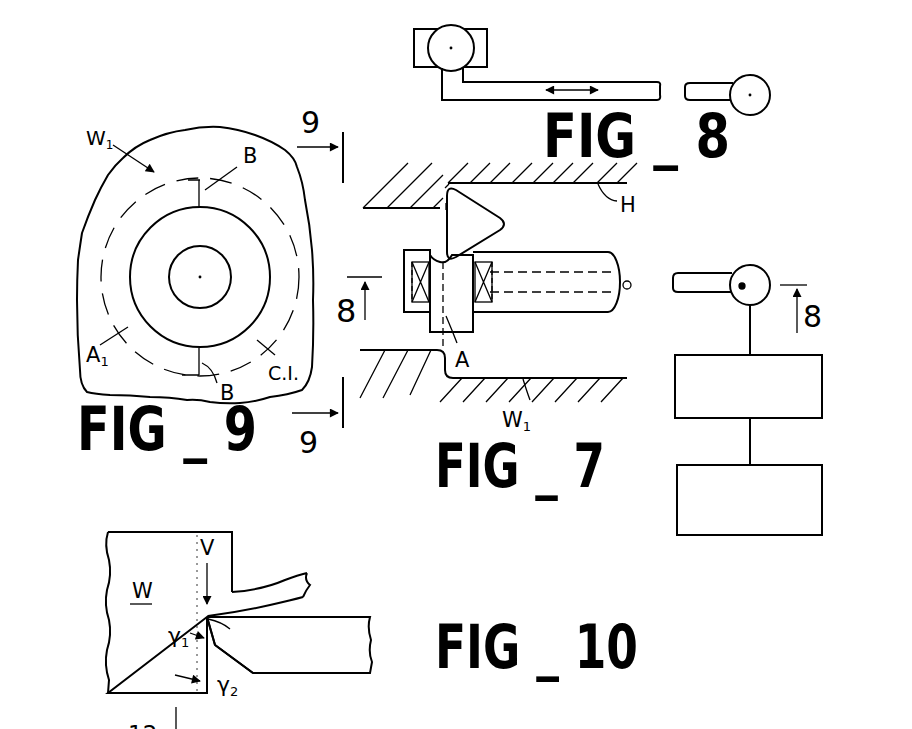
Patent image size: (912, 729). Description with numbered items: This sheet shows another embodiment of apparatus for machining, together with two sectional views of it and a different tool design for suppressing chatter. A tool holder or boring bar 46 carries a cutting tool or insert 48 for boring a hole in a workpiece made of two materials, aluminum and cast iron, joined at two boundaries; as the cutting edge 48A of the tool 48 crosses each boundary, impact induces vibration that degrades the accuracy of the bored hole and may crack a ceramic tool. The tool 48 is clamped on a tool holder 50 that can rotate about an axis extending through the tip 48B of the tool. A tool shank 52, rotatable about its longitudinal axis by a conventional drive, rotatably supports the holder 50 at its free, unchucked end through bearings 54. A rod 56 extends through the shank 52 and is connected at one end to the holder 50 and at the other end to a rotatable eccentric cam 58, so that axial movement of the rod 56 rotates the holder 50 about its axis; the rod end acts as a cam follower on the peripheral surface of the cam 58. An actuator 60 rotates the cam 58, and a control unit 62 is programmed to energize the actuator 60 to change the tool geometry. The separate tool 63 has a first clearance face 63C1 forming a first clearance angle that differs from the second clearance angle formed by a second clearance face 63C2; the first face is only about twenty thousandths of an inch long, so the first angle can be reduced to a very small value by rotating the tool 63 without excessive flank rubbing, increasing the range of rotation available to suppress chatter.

In FIG. 7, the tool holder or boring bar 46 is at (538, 316).
In FIG. 7, the cutting tool or insert 48 is at (492, 211).
In FIG. 7, the cutting edge 48A is at (443, 206).
In FIG. 7, the tip 48B is at (447, 183).
In FIG. 8, the tool holder 50 is at (458, 27).
In FIG. 7, the tool holder 50 is at (462, 332).
In FIG. 7, the tool shank 52 is at (587, 313).
In FIG. 8, the bearings 54 is at (488, 50).
In FIG. 7, the bearings 54 is at (420, 307).
In FIG. 8, the rod 56 is at (578, 80).
In FIG. 7, the rod 56 is at (692, 272).
In FIG. 8, the rotatable eccentric cam 58 is at (762, 77).
In FIG. 7, the rotatable eccentric cam 58 is at (762, 263).
In FIG. 7, the actuator 60 is at (720, 355).
In FIG. 7, the control unit 62 is at (720, 465).
In FIG. 10, the tool 63 is at (353, 608).
In FIG. 10, the first clearance face 63C1 is at (220, 637).
In FIG. 10, the second clearance face 63C2 is at (250, 673).